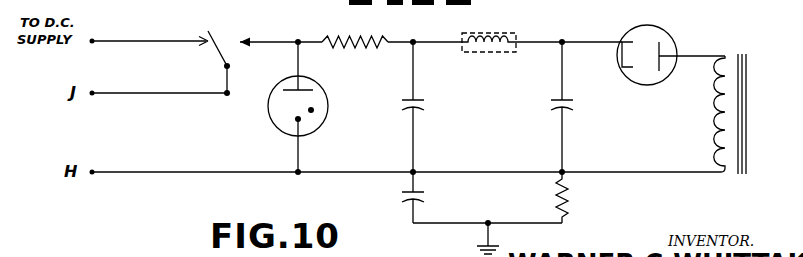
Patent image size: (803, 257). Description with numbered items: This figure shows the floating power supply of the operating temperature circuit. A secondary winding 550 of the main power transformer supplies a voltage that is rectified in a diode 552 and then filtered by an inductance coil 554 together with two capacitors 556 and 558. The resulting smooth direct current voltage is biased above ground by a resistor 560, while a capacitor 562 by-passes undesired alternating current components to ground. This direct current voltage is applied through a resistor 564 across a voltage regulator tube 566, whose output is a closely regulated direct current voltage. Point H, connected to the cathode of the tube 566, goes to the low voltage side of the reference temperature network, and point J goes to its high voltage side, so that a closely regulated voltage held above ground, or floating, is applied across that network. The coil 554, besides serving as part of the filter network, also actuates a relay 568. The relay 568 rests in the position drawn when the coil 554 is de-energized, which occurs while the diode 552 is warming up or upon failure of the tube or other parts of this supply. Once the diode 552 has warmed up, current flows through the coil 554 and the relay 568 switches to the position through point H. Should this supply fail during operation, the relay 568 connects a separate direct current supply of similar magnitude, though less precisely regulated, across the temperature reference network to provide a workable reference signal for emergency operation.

The secondary winding 550 is at (727, 57).
The diode 552 is at (661, 31).
The inductance coil 554 is at (494, 53).
The capacitor 556 is at (566, 109).
The capacitor 558 is at (418, 109).
The resistor 560 is at (570, 200).
The capacitor 562 is at (420, 199).
The resistor 564 is at (357, 41).
The voltage regulator tube 566 is at (323, 87).
The relay 568 is at (222, 46).